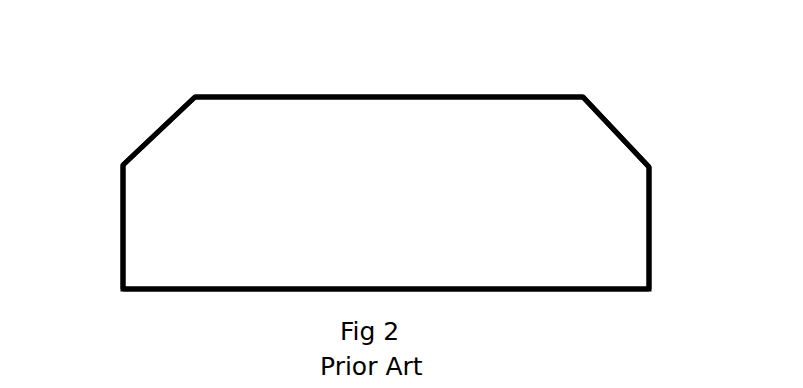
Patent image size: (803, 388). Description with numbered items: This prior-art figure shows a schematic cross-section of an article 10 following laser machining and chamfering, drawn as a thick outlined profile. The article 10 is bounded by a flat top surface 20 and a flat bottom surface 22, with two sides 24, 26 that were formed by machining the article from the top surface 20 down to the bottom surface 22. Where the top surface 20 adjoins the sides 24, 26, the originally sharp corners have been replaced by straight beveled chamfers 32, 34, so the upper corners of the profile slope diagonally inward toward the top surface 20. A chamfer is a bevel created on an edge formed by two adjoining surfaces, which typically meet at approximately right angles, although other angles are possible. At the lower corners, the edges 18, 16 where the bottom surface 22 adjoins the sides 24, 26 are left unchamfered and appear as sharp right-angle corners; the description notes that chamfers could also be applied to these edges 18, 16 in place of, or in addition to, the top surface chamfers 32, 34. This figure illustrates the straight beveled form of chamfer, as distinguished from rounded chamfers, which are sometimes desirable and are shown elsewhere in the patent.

The article 10 is at (386, 193).
The edge 16 is at (637, 292).
The edge 18 is at (123, 290).
The top surface 20 is at (383, 97).
The bottom surface 22 is at (557, 292).
The side 24 is at (123, 206).
The side 26 is at (650, 212).
The chamfer 32 is at (158, 133).
The chamfer 34 is at (608, 127).